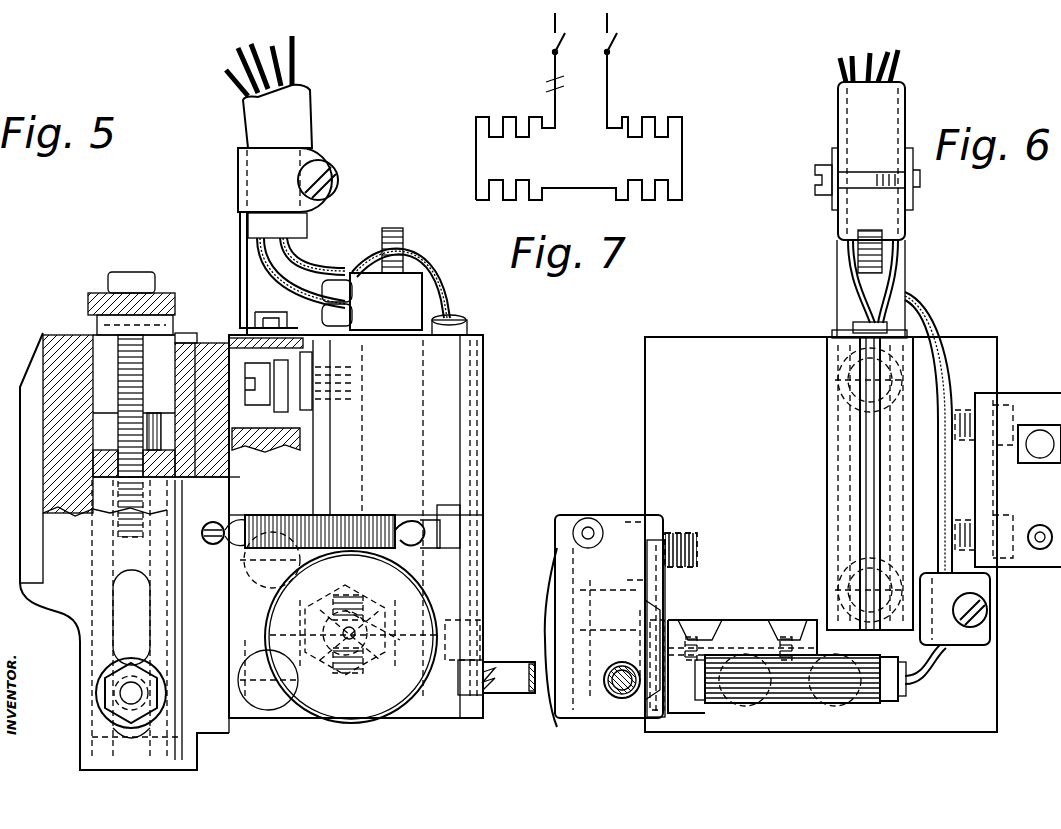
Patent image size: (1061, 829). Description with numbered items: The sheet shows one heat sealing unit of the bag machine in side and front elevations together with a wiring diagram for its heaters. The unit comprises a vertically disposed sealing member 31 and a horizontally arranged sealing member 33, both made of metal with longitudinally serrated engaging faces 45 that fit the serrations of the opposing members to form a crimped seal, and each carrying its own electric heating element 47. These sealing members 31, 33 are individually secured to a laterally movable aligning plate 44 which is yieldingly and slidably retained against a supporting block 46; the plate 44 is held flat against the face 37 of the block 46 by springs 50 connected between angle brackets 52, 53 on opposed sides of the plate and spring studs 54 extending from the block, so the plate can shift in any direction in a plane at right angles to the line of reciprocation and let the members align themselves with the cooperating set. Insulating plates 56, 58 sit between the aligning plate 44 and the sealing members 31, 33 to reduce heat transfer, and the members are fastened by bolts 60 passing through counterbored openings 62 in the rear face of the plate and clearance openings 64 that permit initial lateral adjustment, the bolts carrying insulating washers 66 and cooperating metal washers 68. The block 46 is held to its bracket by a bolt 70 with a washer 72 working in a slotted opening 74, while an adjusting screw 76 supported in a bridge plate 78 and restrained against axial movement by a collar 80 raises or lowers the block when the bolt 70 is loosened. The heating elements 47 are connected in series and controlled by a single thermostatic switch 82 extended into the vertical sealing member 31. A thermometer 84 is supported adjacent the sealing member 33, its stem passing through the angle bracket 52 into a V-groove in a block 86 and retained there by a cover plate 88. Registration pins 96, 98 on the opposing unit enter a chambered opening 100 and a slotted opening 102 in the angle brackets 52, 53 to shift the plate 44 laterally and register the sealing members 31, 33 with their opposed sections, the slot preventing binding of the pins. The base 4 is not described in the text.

In FIG. 5, the base frame 4 is at (43, 339).
In FIG. 5, the sealing member 31 is at (460, 375).
In FIG. 6, the sealing member 31 is at (830, 447).
In FIG. 5, the sealing member 33 is at (468, 648).
In FIG. 6, the sealing member 33 is at (866, 705).
In FIG. 5, the face 37 is at (240, 478).
In FIG. 5, the aligning plate 44 is at (356, 607).
In FIG. 6, the aligning plate 44 is at (727, 340).
In FIG. 5, the serrated engaging faces 45 is at (482, 416).
In FIG. 6, the serrated engaging faces 45 is at (860, 487).
In FIG. 5, the supporting block 46 is at (210, 342).
In FIG. 5, the electric heating element 47 is at (468, 326).
In FIG. 6, the electric heating element 47 is at (855, 325).
In FIG. 7, the electric heating element 47 is at (504, 104).
In FIG. 5, the springs 50 is at (343, 513).
In FIG. 6, the springs 50 is at (1036, 552).
In FIG. 5, the angle bracket 52 is at (445, 510).
In FIG. 6, the angle bracket 53 is at (1010, 393).
In FIG. 5, the spring studs 54 is at (218, 545).
In FIG. 5, the insulating plate 56 is at (325, 453).
In FIG. 5, the insulating plate 58 is at (339, 720).
In FIG. 5, the bolts 60 is at (250, 366).
In FIG. 6, the bolts 60 is at (840, 393).
In FIG. 5, the counterbored openings 62 is at (255, 389).
In FIG. 5, the clearance openings 64 is at (326, 352).
In FIG. 5, the insulating washers 66 is at (305, 414).
In FIG. 5, the metal washers 68 is at (300, 430).
In FIG. 5, the bolt 70 is at (104, 693).
In FIG. 5, the washer 72 is at (96, 708).
In FIG. 5, the slotted opening 74 is at (118, 638).
In FIG. 5, the adjusting screw 76 is at (126, 272).
In FIG. 5, the bridge plate 78 is at (90, 296).
In FIG. 5, the collar 80 is at (105, 326).
In FIG. 5, the thermostatic switch 82 is at (408, 288).
In FIG. 6, the thermostatic switch 82 is at (840, 290).
In FIG. 7, the thermostatic switch 82 is at (538, 75).
In FIG. 5, the thermometer 84 is at (368, 718).
In FIG. 5, the block 86 is at (384, 627).
In FIG. 6, the block 86 is at (720, 640).
In FIG. 5, the cover plate 88 is at (353, 600).
In FIG. 6, the cover plate 88 is at (745, 625).
In FIG. 5, the registration pin 96 is at (521, 697).
In FIG. 6, the registration pin 96 is at (654, 694).
In FIG. 6, the registration pin 98 is at (1030, 462).
In FIG. 5, the chambered opening 100 is at (612, 692).
In FIG. 6, the opening 102 is at (978, 520).